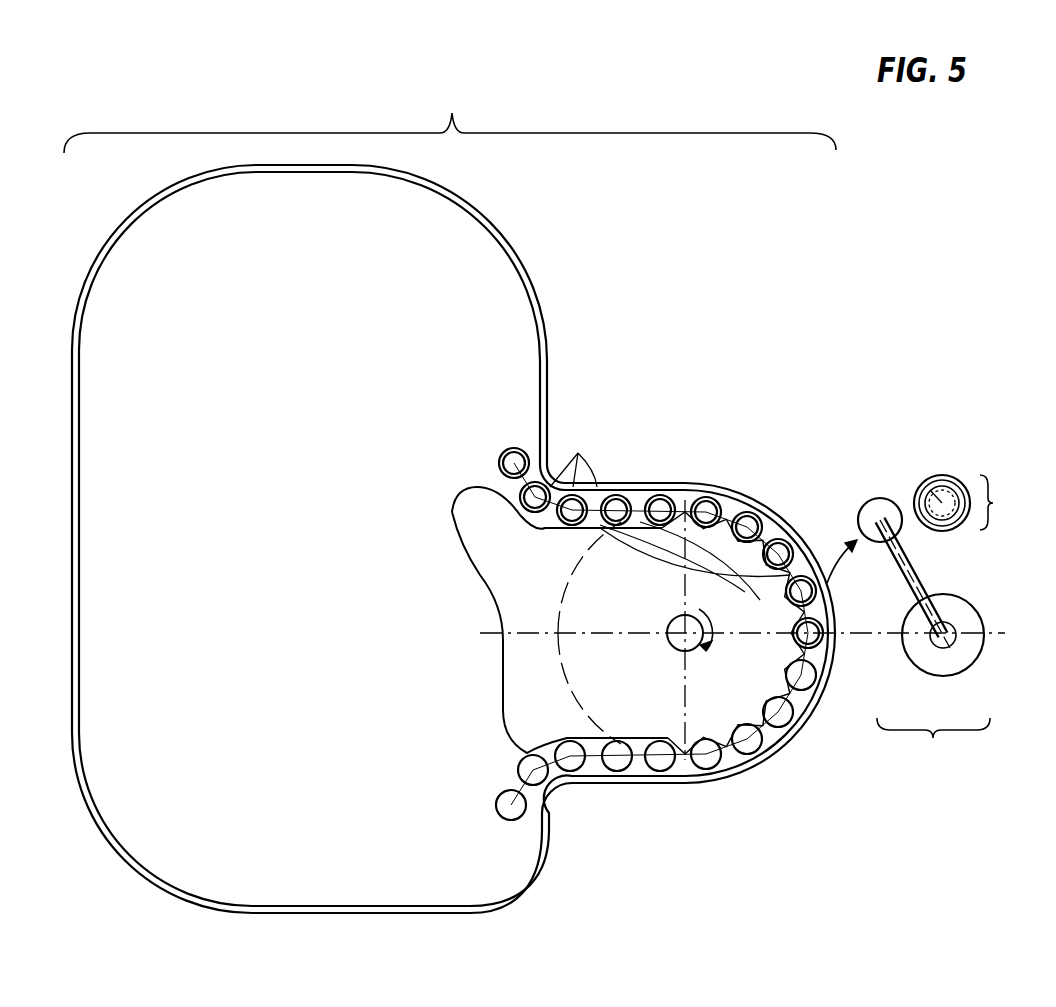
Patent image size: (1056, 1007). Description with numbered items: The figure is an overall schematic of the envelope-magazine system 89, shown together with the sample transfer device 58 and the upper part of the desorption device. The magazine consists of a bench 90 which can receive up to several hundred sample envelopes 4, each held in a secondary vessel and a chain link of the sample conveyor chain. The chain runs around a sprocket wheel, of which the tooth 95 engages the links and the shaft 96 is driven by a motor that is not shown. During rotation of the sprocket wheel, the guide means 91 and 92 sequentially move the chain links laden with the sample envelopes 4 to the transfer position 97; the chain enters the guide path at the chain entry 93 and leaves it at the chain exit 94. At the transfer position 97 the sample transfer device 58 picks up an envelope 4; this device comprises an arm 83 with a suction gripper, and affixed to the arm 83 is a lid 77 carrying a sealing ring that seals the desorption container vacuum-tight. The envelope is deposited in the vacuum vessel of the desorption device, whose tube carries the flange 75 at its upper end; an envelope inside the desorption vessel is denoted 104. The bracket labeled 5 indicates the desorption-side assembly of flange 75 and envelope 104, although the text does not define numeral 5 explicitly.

The envelope-magazine system 89 is at (450, 118).
The guide means 92 is at (407, 180).
The bench 90 is at (275, 562).
The guide means 91 is at (483, 580).
The chain entry 93 is at (507, 452).
The chain exit 94 is at (507, 820).
The envelope 4 is at (605, 498).
The tooth 95 is at (702, 633).
The shaft 96 is at (671, 650).
The transfer position 97 is at (835, 650).
The sample transfer device 58 is at (908, 607).
The lid 77 is at (862, 512).
The arm 83 is at (915, 580).
The flange 75 is at (935, 480).
The envelope inside the desorption vessel 104 is at (920, 505).
The roller assembly 5 is at (934, 487).